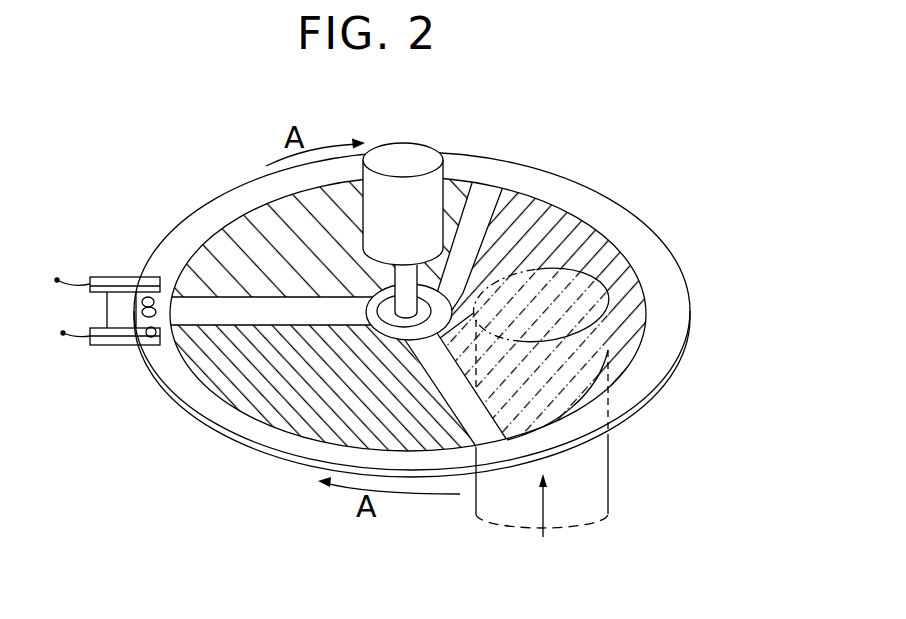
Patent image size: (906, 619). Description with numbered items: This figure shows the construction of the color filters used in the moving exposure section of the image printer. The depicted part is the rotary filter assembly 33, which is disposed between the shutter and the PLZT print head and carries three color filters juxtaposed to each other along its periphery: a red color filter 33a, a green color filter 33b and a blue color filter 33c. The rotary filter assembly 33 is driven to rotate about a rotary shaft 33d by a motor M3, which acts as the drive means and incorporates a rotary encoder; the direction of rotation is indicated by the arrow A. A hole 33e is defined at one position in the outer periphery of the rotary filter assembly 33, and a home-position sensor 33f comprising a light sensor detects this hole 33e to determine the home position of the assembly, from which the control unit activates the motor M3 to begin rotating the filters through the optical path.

The rotary filter assembly 33 is at (692, 346).
The red color filter 33a is at (632, 281).
The green color filter 33b is at (243, 403).
The blue color filter 33c is at (223, 233).
The rotary shaft 33d is at (465, 268).
The hole 33e is at (142, 326).
The home-position sensor 33f is at (117, 334).
The motor M3 is at (433, 156).